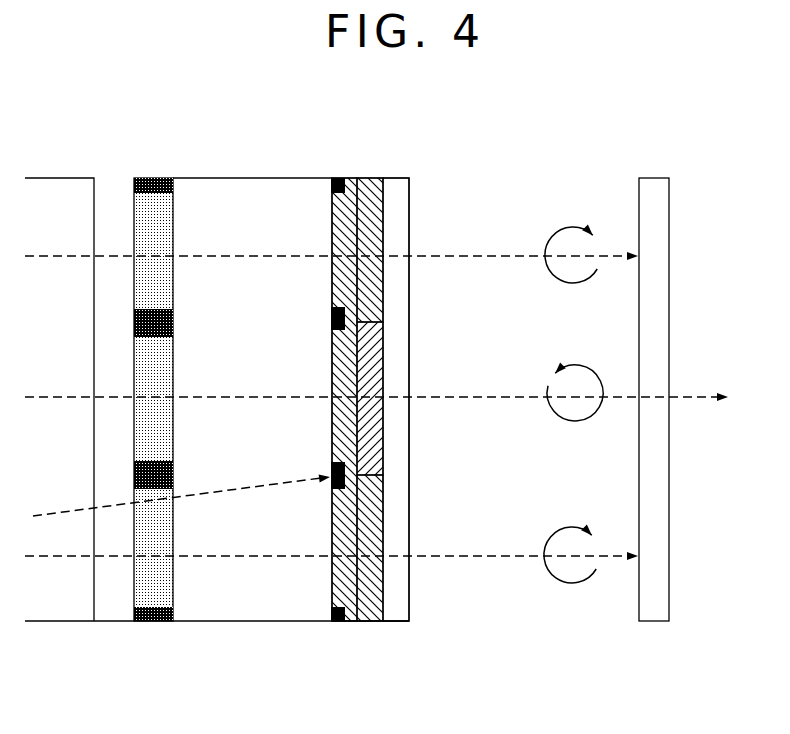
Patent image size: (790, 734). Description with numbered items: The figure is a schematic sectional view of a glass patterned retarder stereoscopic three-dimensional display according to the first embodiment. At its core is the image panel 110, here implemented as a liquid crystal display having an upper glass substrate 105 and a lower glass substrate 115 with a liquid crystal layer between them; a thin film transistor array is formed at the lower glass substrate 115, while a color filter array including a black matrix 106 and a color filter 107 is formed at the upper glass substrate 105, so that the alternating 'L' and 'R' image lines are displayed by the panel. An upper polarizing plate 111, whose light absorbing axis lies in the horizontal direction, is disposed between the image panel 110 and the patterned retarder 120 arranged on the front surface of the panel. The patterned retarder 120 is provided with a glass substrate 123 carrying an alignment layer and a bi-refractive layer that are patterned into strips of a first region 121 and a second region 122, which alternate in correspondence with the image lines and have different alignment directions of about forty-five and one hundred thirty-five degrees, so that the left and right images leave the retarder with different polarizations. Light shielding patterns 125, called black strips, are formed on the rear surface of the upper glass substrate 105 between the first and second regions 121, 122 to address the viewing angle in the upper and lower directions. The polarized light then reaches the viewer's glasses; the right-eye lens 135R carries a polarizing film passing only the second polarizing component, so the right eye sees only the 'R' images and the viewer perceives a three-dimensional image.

The image panel 110 is at (217, 452).
The lower glass substrate 115 is at (67, 621).
The upper glass substrate 105 is at (265, 621).
The black matrix 106 is at (153, 432).
The color filter 107 is at (165, 586).
The patterned retarder 120 is at (395, 452).
The upper polarizing plate 111 is at (345, 621).
The first region 121 is at (370, 621).
The second region 122 is at (375, 423).
The glass substrate 123 is at (400, 397).
The light shielding patterns 125 is at (330, 621).
The right-eye lens 135R is at (655, 621).